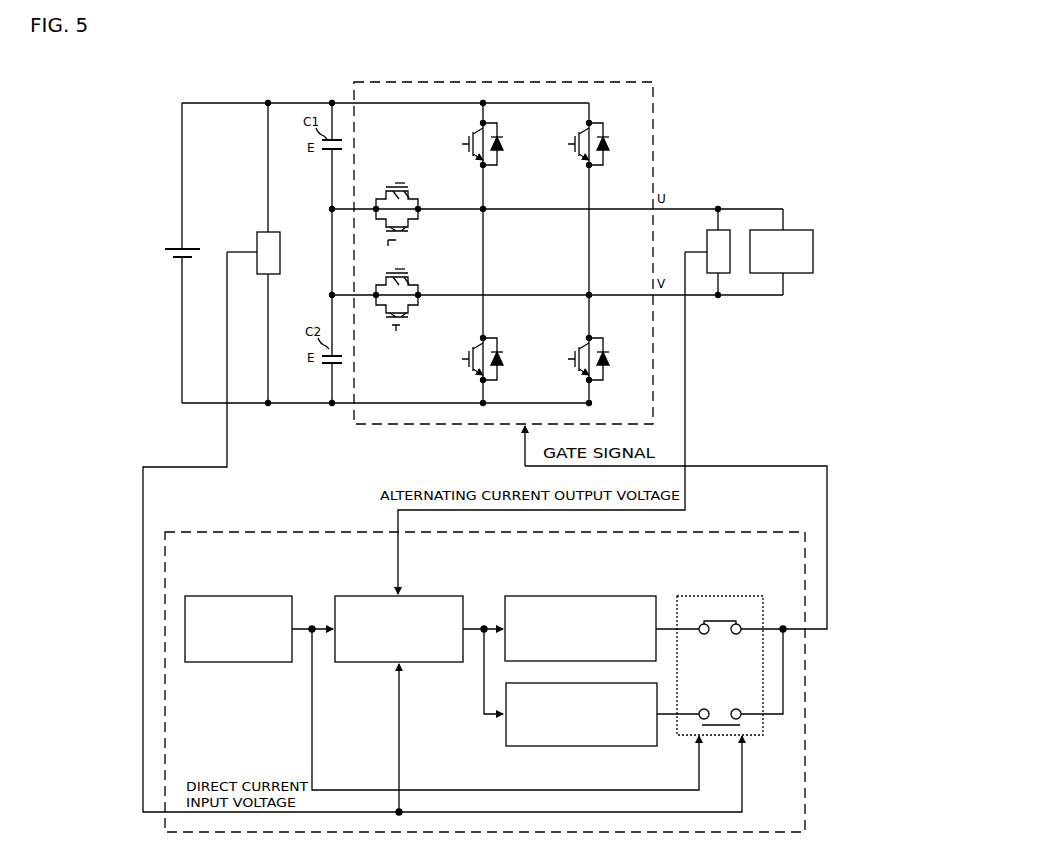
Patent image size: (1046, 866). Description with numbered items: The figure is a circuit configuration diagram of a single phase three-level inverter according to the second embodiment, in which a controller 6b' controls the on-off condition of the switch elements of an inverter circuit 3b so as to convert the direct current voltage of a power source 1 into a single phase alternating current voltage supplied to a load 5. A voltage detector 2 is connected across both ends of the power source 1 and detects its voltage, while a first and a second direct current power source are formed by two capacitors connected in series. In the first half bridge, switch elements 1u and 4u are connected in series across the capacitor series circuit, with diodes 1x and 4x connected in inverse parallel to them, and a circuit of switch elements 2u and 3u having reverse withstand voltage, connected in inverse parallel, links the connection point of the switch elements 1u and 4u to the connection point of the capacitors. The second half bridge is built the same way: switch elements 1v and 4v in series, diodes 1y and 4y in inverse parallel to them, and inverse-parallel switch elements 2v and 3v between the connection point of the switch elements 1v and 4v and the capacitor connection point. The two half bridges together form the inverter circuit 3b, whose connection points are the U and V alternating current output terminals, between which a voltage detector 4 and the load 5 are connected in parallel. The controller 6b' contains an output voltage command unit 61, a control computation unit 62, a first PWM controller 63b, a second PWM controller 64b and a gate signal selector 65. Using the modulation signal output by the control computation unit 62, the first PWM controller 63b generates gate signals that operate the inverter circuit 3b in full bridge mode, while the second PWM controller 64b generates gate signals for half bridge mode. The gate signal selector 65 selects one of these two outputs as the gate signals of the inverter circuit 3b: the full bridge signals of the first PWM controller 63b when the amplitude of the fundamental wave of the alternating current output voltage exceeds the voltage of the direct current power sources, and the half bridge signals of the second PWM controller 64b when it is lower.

The power source 1 is at (174, 249).
The voltage detector 2 is at (281, 232).
The inverter circuit 3b is at (524, 81).
The switch element 1u is at (462, 144).
The switch element 1v is at (571, 144).
The diode 1x is at (502, 154).
The diode 1y is at (610, 154).
The switch element 2u is at (400, 183).
The switch element 2v is at (412, 278).
The switch element 3u is at (414, 228).
The switch element 3v is at (398, 328).
The switch element 4u is at (462, 357).
The switch element 4v is at (571, 357).
The diode 4x is at (502, 367).
The diode 4y is at (610, 367).
The voltage detector 4 is at (727, 219).
The load 5 is at (800, 229).
The controller 6b' is at (485, 662).
The output voltage command unit 61 is at (222, 594).
The control computation unit 62 is at (362, 594).
The first PWM controller 63b is at (522, 594).
The second PWM controller 64b is at (502, 750).
The gate signal selector 65 is at (684, 594).